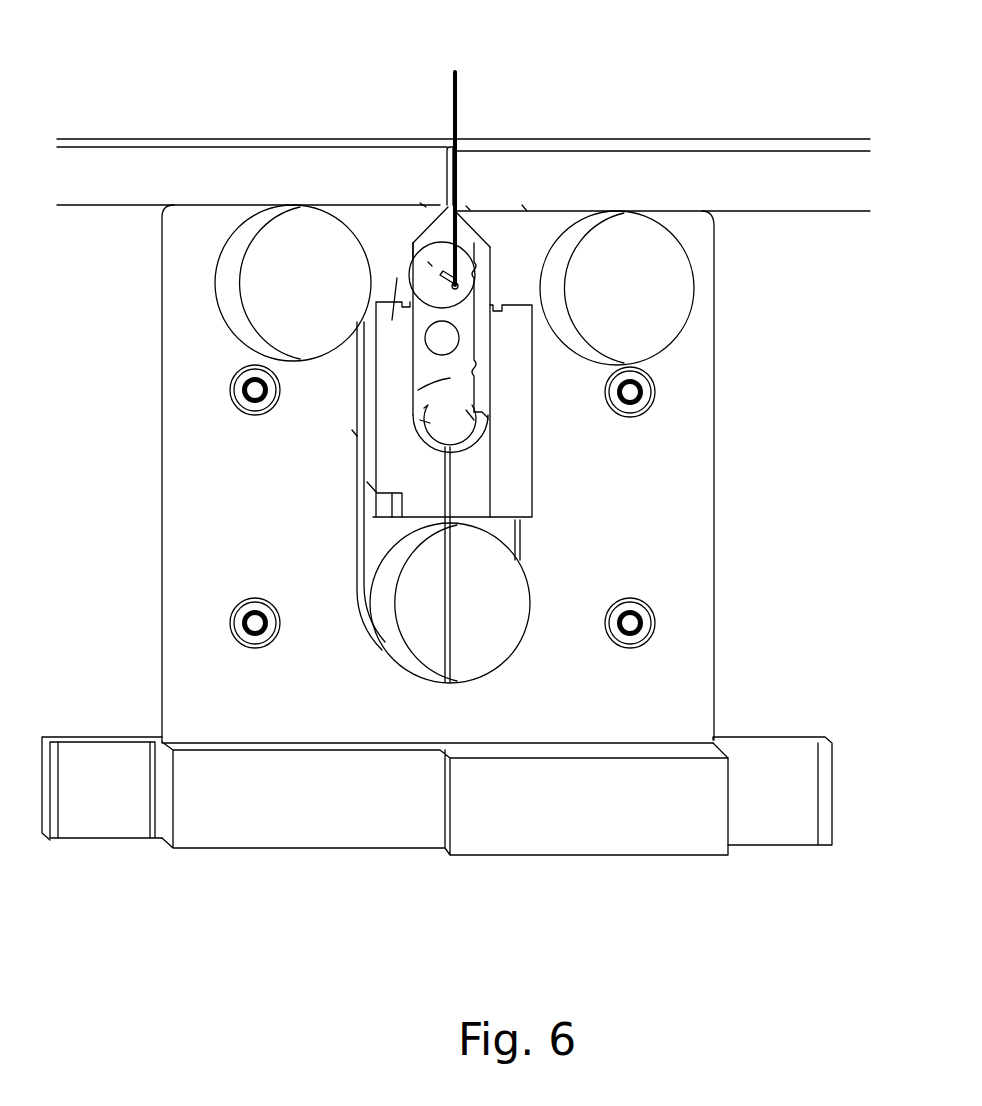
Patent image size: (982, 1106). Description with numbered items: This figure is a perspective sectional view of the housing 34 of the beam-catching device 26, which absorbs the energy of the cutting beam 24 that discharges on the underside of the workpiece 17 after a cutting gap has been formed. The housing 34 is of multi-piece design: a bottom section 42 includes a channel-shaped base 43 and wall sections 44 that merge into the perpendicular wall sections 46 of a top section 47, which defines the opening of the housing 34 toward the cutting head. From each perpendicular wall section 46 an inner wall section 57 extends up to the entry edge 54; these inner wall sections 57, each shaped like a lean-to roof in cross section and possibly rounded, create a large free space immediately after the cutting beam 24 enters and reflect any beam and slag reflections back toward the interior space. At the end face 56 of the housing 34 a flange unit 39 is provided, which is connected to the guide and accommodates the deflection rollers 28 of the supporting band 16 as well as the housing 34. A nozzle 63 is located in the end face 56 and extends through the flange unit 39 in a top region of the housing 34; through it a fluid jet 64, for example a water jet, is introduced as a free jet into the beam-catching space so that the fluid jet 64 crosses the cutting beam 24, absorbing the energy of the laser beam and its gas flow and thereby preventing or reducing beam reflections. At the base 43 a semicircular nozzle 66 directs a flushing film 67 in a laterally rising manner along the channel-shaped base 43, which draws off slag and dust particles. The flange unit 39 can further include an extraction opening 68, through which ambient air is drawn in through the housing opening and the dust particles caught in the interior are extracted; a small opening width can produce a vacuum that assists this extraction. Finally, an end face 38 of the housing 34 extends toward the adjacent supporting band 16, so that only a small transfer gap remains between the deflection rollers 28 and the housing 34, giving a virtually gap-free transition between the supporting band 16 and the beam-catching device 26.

The supporting band 16 is at (357, 550).
The workpiece 17 is at (680, 183).
The cutting beam 24 is at (458, 95).
The beam-catching device 26 is at (547, 487).
The deflection rollers 28 is at (247, 282).
The housing 34 is at (349, 432).
The end face 38 is at (525, 209).
The flange unit 39 is at (735, 490).
The bottom section 42 is at (393, 458).
The base 43 is at (467, 460).
The wall sections 44 is at (473, 368).
The wall sections 46 is at (492, 282).
The top section 47 is at (397, 278).
The entry edge 54 is at (428, 207).
The end face 56 is at (420, 385).
The inner wall section 57 is at (527, 205).
The nozzle 63 is at (428, 262).
The fluid jet 64 is at (412, 257).
The semicircular nozzle 66 is at (478, 410).
The flushing film 67 is at (472, 430).
The extraction opening 68 is at (443, 338).